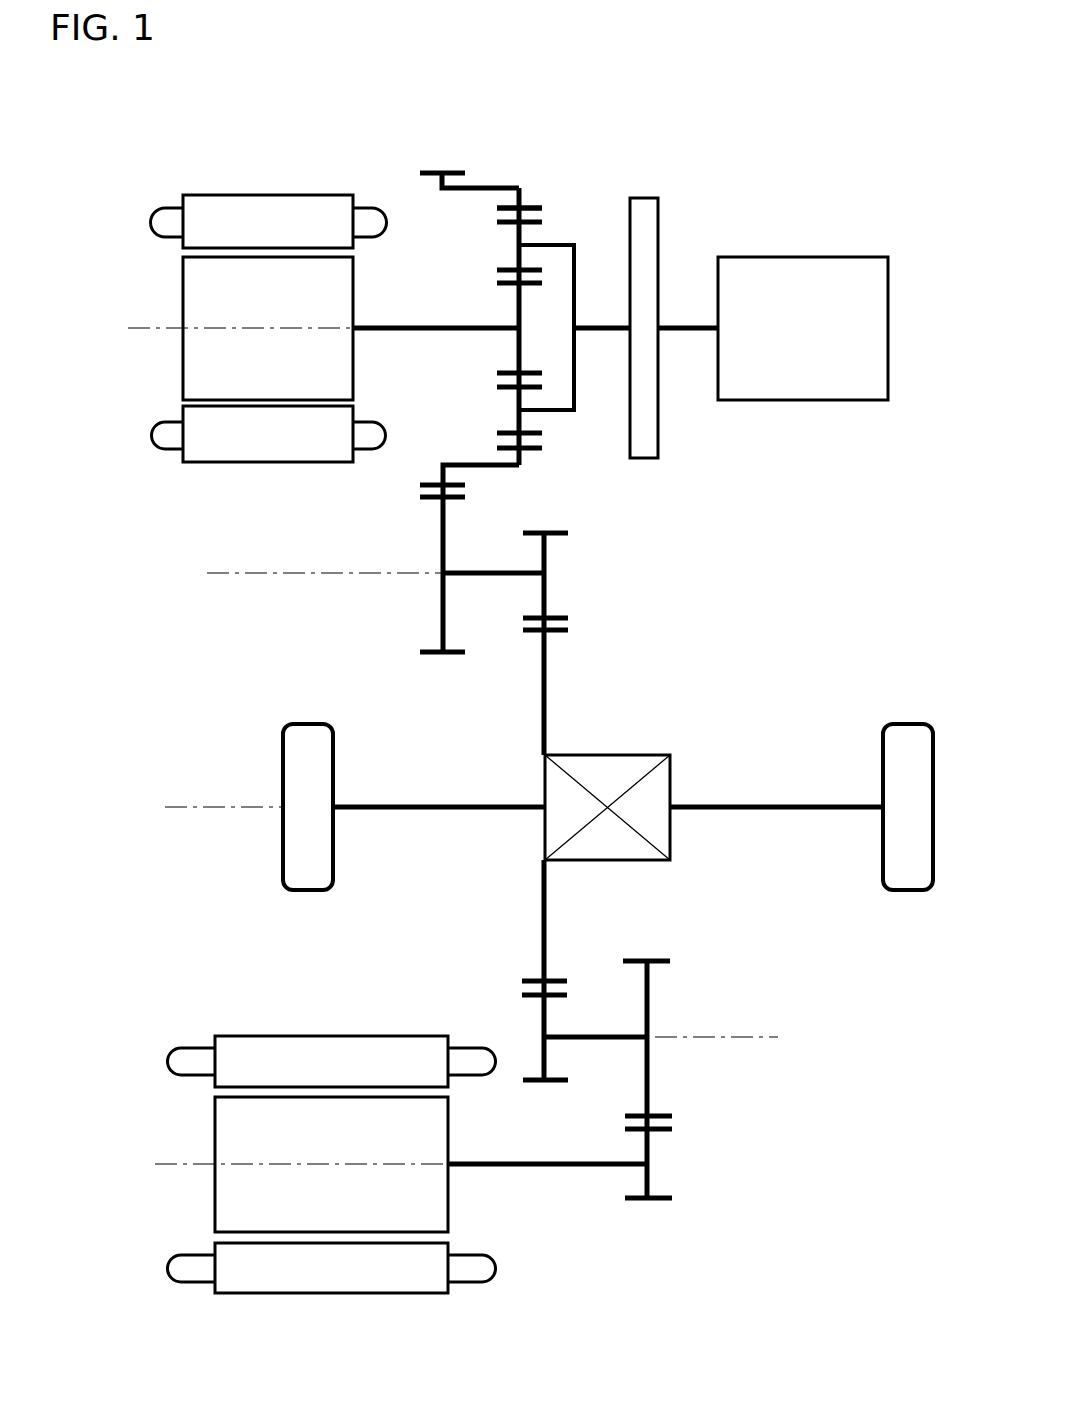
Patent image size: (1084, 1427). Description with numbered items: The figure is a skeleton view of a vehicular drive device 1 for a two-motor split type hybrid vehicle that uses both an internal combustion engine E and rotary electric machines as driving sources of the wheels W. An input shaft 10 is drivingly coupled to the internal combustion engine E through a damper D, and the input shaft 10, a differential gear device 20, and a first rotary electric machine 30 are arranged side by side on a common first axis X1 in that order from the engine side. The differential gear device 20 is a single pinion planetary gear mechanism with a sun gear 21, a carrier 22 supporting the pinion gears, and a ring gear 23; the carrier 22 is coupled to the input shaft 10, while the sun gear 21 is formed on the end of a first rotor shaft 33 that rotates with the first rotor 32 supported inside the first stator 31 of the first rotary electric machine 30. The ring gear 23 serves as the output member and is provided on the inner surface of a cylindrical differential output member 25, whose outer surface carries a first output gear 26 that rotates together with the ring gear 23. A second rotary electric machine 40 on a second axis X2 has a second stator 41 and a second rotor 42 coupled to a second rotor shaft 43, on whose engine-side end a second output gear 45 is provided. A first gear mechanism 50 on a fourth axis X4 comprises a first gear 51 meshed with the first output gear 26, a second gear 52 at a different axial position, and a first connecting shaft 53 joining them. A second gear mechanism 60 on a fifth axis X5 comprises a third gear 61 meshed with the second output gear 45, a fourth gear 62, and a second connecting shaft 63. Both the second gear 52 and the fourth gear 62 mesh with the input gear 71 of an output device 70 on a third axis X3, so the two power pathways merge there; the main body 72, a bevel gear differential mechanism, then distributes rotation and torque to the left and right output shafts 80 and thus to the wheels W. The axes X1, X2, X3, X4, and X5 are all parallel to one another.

The vehicular drive device 1 is at (128, 155).
The input shaft 10 is at (605, 333).
The differential gear device 20 is at (484, 271).
The sun gear 21 is at (508, 285).
The carrier 22 is at (562, 242).
The ring gear 23 is at (532, 207).
The differential output member 25 is at (502, 188).
The first output gear 26 is at (436, 170).
The first rotary electric machine 30 is at (246, 281).
The first stator 31 is at (290, 203).
The first rotor 32 is at (190, 285).
The first rotor shaft 33 is at (420, 332).
The second rotary electric machine 40 is at (321, 1112).
The second stator 41 is at (360, 1040).
The second rotor 42 is at (220, 1124).
The second rotor shaft 43 is at (548, 1168).
The second output gear 45 is at (660, 1203).
The first gear mechanism 50 is at (462, 610).
The first gear 51 is at (433, 657).
The second gear 52 is at (555, 528).
The first connecting shaft 53 is at (488, 570).
The second gear mechanism 60 is at (632, 1029).
The third gear 61 is at (638, 958).
The fourth gear 62 is at (528, 1085).
The second connecting shaft 63 is at (585, 1042).
The output device 70 is at (628, 739).
The input gear 71 is at (560, 633).
The main body 72 is at (658, 755).
The output shaft 80 is at (448, 812).
The damper D is at (647, 197).
The internal combustion engine E is at (818, 262).
The wheel W is at (305, 727).
The first axis X1 is at (222, 327).
The second axis X2 is at (283, 1163).
The third axis X3 is at (203, 807).
The fourth axis X4 is at (305, 573).
The fifth axis X5 is at (736, 1037).